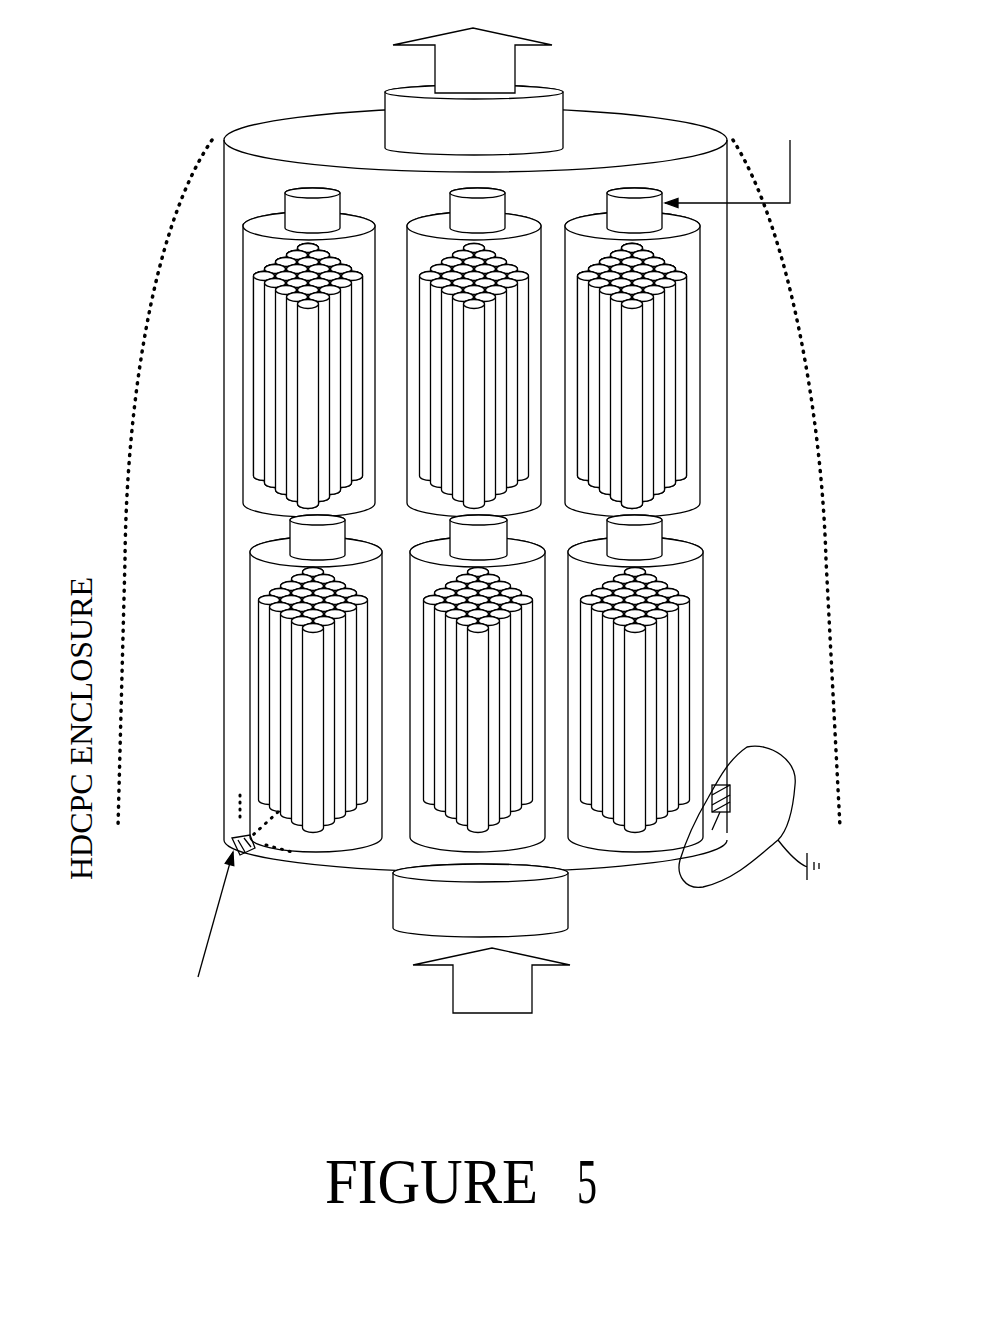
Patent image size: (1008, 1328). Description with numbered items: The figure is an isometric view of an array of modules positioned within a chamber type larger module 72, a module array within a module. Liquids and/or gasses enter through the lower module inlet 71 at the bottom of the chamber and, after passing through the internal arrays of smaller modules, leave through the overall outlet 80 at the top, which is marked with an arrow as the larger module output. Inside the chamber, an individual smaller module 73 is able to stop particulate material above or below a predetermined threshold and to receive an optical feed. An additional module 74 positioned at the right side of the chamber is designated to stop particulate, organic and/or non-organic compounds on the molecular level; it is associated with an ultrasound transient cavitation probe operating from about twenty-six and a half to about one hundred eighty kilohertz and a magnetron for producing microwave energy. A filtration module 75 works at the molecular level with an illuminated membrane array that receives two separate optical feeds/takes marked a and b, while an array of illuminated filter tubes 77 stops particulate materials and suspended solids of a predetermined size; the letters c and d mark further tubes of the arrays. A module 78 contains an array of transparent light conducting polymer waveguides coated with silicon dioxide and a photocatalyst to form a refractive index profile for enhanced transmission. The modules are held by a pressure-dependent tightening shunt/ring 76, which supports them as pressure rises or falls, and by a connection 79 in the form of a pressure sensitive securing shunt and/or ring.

The lower module inlet 71 is at (377, 902).
The module 72 is at (212, 823).
The individual smaller module 73 is at (248, 678).
The additional module 74 is at (708, 727).
The filtration module 75 is at (693, 408).
The pressure-dependent tightening shunt/ring 76 is at (505, 202).
The array of illuminated filter tubes 77 is at (267, 215).
The module containing an array of light conducting polymer 78 is at (540, 840).
The connection between modules 79 is at (665, 537).
The overall outlet 80 is at (385, 122).
The optical feed/take a is at (680, 312).
The optical feed/take b is at (680, 455).
The tube c is at (343, 318).
The tube d is at (343, 477).